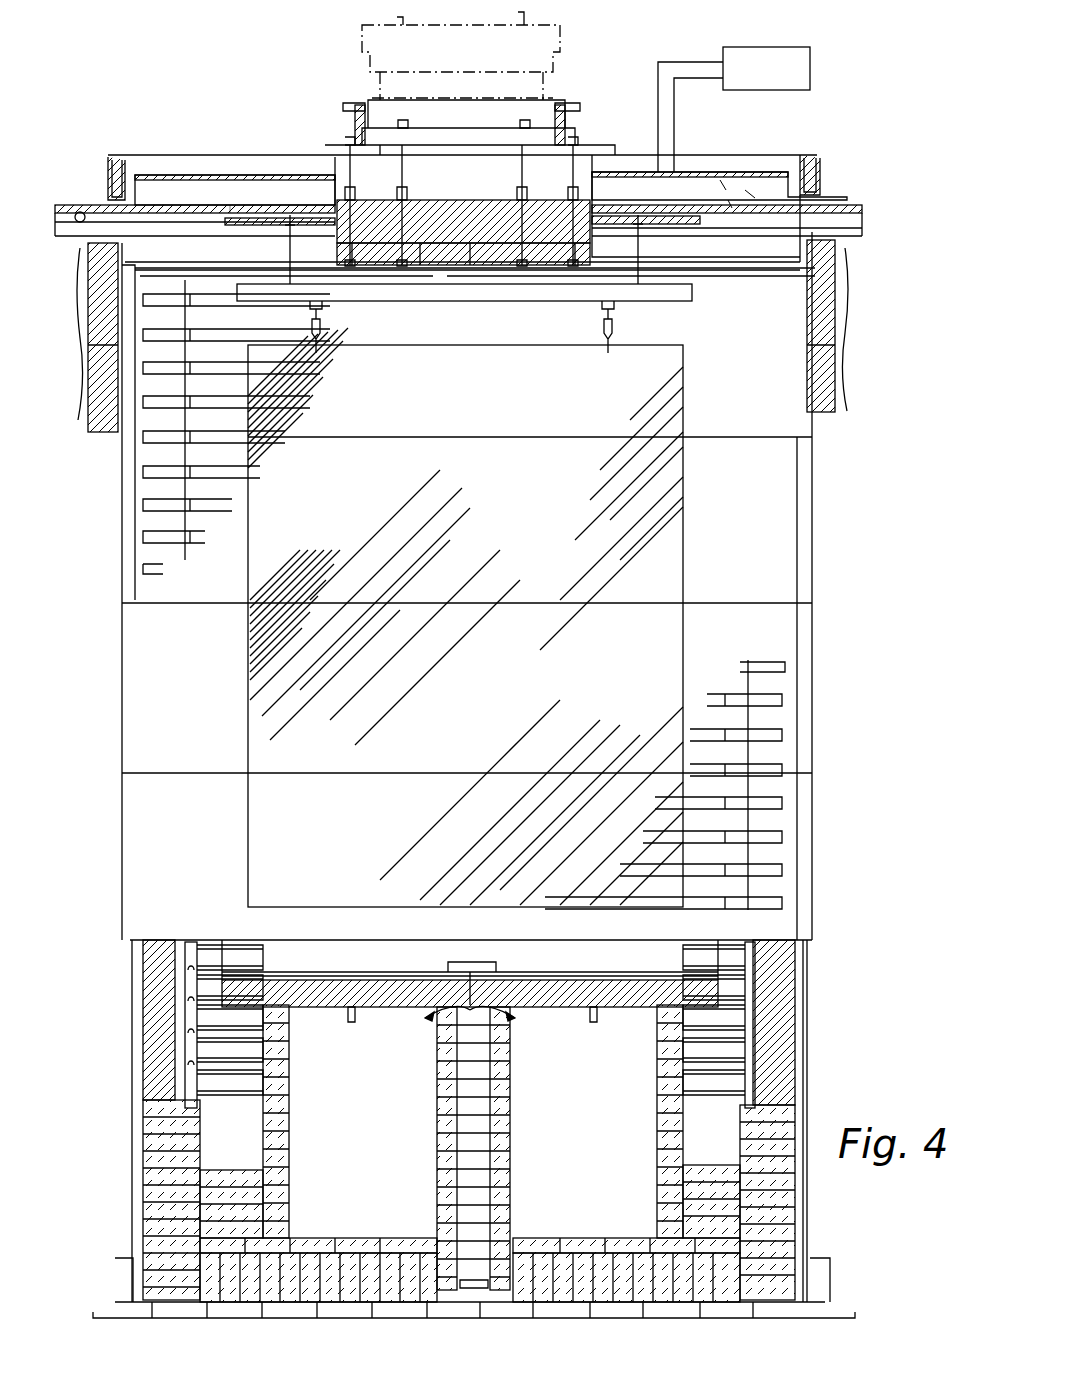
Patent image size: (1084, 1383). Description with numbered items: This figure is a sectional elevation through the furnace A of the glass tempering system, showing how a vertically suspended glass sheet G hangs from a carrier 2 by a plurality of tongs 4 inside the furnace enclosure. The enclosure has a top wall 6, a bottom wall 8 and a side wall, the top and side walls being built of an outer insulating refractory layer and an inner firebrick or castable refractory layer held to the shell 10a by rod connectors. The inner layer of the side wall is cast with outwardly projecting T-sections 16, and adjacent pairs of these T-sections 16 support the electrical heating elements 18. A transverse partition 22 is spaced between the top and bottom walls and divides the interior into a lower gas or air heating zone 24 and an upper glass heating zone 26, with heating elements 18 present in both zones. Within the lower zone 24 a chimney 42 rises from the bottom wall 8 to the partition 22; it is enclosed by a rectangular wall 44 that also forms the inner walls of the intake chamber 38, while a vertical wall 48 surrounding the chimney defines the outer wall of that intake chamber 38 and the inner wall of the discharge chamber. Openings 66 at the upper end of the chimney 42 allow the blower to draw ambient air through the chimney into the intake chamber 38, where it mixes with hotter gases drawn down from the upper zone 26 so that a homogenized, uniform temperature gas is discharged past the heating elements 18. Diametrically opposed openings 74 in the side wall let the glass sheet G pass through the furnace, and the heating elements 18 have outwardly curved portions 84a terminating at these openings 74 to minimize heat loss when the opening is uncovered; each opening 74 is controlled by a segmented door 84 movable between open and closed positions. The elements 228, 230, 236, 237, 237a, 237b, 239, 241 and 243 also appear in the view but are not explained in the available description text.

The carrier 2 is at (688, 310).
The tongs 4 is at (320, 350).
The top wall 6 is at (465, 215).
The bottom wall 8 is at (588, 1282).
The shell 10a is at (135, 1190).
The T-sections 16 is at (205, 1048).
The electrical heating elements 18 is at (205, 1080).
The transverse partition 22 is at (612, 1003).
The lower gas or air heating zone 24 is at (312, 1020).
The upper glass heating zone 26 is at (770, 578).
The intake chamber 38 is at (370, 1020).
The chimney 42 is at (490, 1152).
The rectangular wall 44 is at (500, 1090).
The vertical wall 48 is at (285, 1190).
The openings 66 is at (445, 1028).
The openings 74 is at (133, 665).
The door 84 is at (100, 432).
The outwardly curved portions 84a is at (145, 502).
The left duct 228 is at (270, 195).
The passage 230 is at (182, 222).
The gap 236 is at (745, 215).
The right housing 237 is at (620, 172).
The end covers 237a is at (80, 205).
The right duct 237b is at (697, 185).
The blower 239 is at (810, 57).
The cover plate 241 is at (62, 215).
The inner plate 243 is at (100, 222).
The furnace A is at (750, 148).
The glass sheet G is at (668, 540).